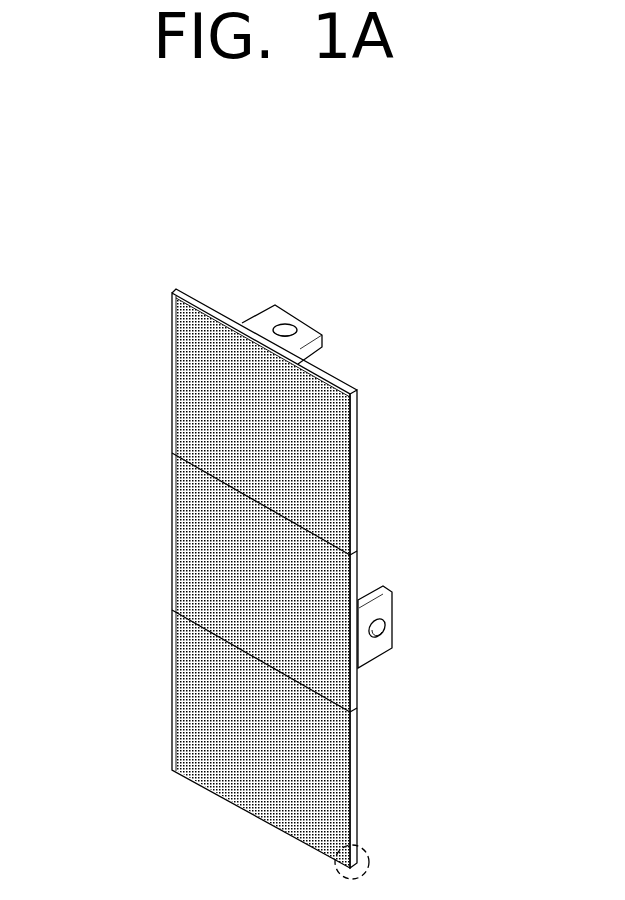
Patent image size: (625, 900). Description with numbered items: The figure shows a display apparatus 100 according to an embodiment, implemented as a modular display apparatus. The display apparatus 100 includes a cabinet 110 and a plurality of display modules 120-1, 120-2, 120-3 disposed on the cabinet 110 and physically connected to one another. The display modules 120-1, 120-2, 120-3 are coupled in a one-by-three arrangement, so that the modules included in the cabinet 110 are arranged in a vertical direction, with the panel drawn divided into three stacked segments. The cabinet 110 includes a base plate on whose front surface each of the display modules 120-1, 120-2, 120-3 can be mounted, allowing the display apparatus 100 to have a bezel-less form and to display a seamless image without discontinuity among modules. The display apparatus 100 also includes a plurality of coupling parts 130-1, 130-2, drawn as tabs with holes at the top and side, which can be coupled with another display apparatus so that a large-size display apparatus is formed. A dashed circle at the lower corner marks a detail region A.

The display apparatus 100 is at (297, 157).
The cabinet 110 is at (342, 388).
The display module 120-1 is at (195, 405).
The display module 120-2 is at (196, 536).
The display module 120-3 is at (195, 705).
The coupling part 130-1 is at (303, 322).
The coupling part 130-2 is at (392, 618).
The detail region A is at (372, 858).